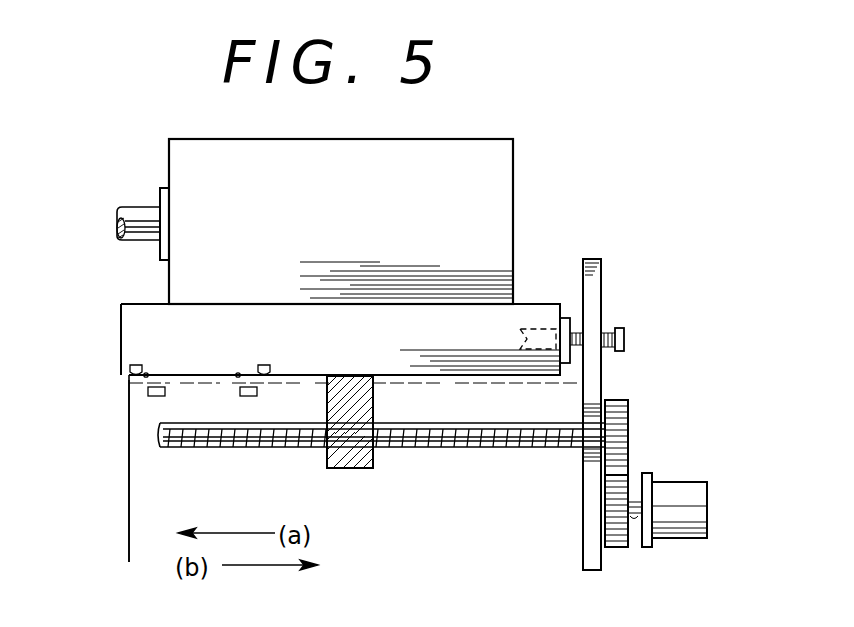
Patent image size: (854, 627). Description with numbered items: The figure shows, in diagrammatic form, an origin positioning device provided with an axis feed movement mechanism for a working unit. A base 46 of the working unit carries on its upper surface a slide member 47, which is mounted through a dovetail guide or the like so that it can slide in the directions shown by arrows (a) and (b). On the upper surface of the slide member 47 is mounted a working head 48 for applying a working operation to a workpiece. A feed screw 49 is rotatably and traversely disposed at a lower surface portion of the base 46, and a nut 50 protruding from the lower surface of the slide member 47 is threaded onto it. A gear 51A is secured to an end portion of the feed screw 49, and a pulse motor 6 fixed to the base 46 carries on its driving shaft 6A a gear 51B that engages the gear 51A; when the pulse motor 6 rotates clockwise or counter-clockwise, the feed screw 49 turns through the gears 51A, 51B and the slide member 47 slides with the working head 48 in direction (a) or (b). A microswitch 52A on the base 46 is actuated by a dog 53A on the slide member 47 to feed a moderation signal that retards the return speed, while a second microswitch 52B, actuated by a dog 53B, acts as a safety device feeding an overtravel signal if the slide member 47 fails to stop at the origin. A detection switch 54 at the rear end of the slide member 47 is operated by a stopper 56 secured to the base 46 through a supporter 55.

The pulse motor 6 is at (682, 500).
The driving shaft 6A is at (634, 516).
The base 46 is at (128, 497).
The slide member 47 is at (125, 332).
The working head 48 is at (497, 158).
The feed screw 49 is at (230, 448).
The nut 50 is at (352, 468).
The gear 51A is at (622, 421).
The gear 51B is at (618, 547).
The microswitch 52A is at (240, 393).
The microswitch 52B is at (148, 391).
The dog 53A is at (264, 365).
The dog 53B is at (130, 369).
The detection switch 54 is at (548, 340).
The supporter 55 is at (594, 288).
The stopper 56 is at (618, 336).